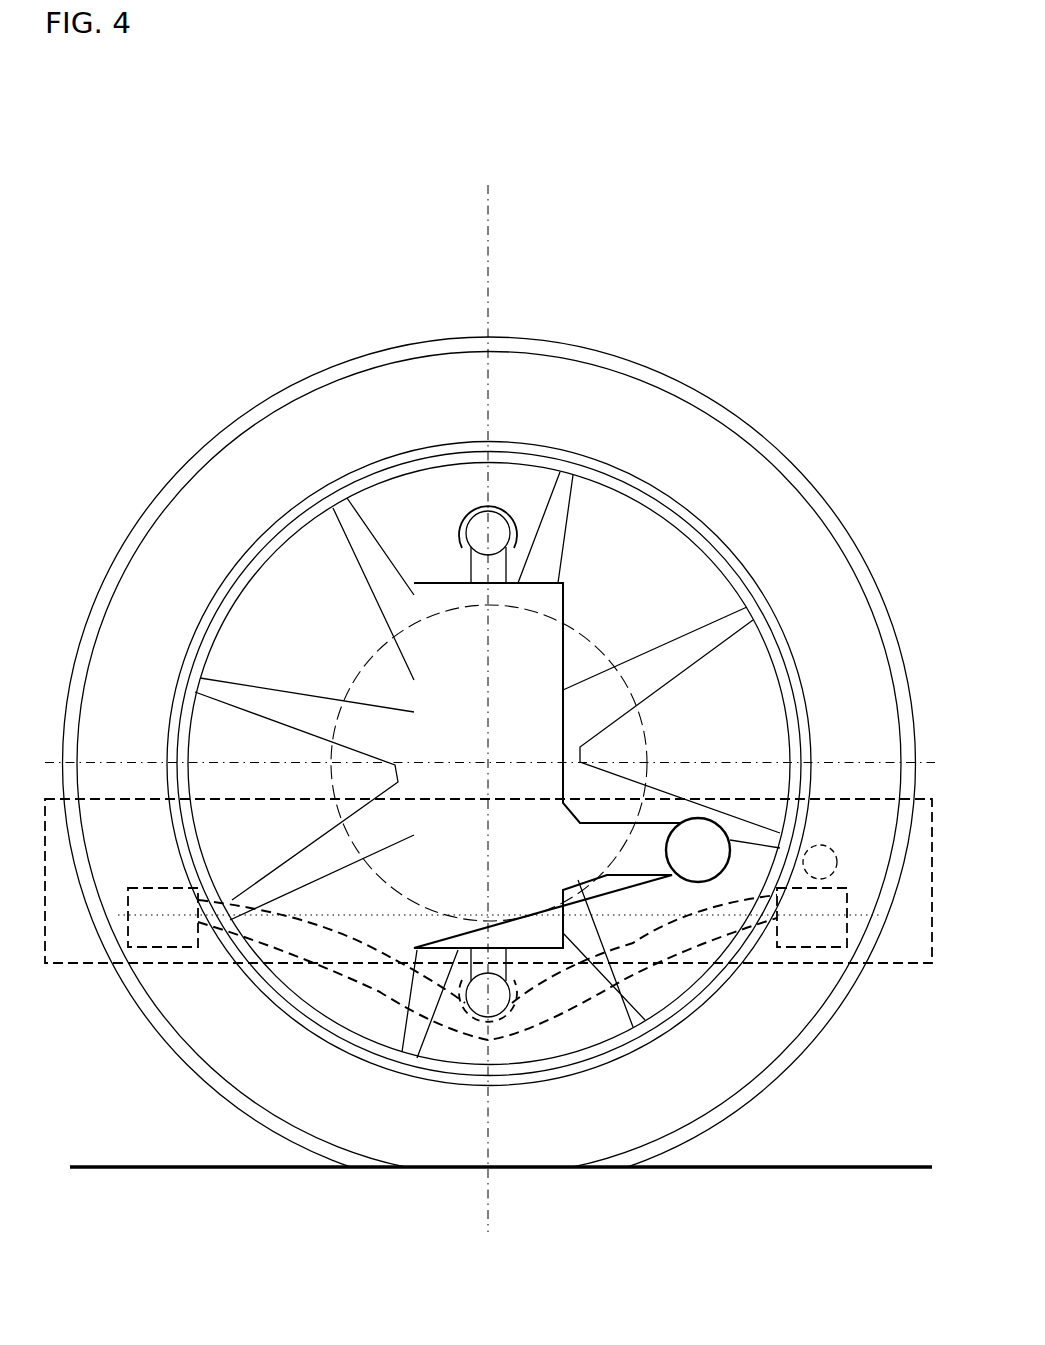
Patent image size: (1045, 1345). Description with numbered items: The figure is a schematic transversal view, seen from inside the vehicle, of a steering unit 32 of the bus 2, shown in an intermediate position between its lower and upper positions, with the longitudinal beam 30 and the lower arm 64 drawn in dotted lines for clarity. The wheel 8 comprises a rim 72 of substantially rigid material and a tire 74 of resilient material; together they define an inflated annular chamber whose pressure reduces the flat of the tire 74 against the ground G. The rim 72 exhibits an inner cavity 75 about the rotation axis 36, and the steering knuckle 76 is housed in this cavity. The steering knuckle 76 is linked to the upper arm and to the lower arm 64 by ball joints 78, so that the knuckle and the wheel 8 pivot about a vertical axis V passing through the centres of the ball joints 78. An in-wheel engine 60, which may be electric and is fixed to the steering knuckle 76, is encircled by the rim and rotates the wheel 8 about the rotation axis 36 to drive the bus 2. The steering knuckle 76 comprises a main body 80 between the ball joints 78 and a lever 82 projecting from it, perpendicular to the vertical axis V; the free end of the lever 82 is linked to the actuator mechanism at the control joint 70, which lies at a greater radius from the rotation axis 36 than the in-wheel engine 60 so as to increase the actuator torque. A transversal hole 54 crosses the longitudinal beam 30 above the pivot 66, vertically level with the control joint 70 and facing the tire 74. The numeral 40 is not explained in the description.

The bus 2 is at (374, 168).
The wheel 8 is at (212, 305).
The wheel 40 is at (787, 231).
The longitudinal beam 30 is at (878, 968).
The tire 74 is at (329, 438).
The rim 72 is at (255, 568).
The inner cavity 75 is at (697, 736).
The steering knuckle 76 is at (553, 606).
The steering unit 32 is at (512, 699).
The main body 80 is at (441, 866).
The lever 82 is at (628, 872).
The rotation axis 36 is at (488, 762).
The in-wheel engine 60 is at (345, 685).
The control joint 70 is at (682, 866).
The ball joints 78 is at (472, 540).
The transversal hole 54 is at (822, 852).
The pivot 66 is at (148, 927).
The lower arm 64 is at (377, 987).
The vertical axis V is at (497, 257).
The ground G is at (160, 1170).